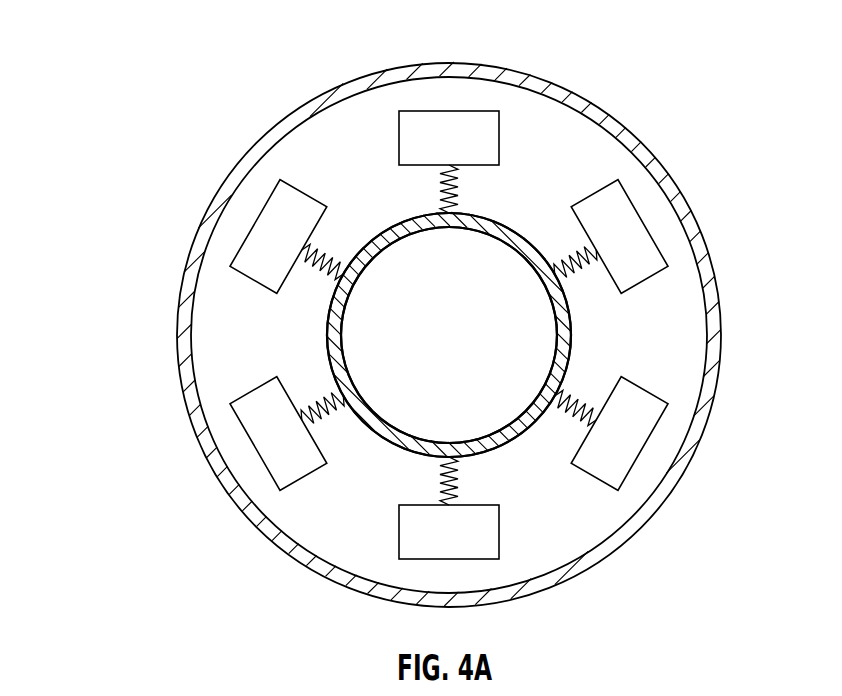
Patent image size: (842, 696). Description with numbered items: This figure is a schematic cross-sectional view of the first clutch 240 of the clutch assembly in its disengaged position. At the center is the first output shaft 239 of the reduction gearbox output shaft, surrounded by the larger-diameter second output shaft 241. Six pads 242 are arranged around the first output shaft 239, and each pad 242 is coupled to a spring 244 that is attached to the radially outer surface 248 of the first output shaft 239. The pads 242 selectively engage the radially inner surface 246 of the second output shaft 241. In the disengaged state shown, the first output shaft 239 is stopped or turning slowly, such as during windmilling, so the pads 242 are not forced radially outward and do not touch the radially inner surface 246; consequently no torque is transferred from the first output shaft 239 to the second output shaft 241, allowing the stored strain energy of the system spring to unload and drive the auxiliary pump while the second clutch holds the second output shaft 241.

The first clutch 240 is at (135, 42).
The second output shaft 241 is at (234, 167).
The pad 242 is at (465, 130).
The spring 244 is at (458, 205).
The radially inner surface 246 is at (327, 110).
The radially outer surface 248 is at (330, 305).
The first output shaft 239 is at (333, 322).